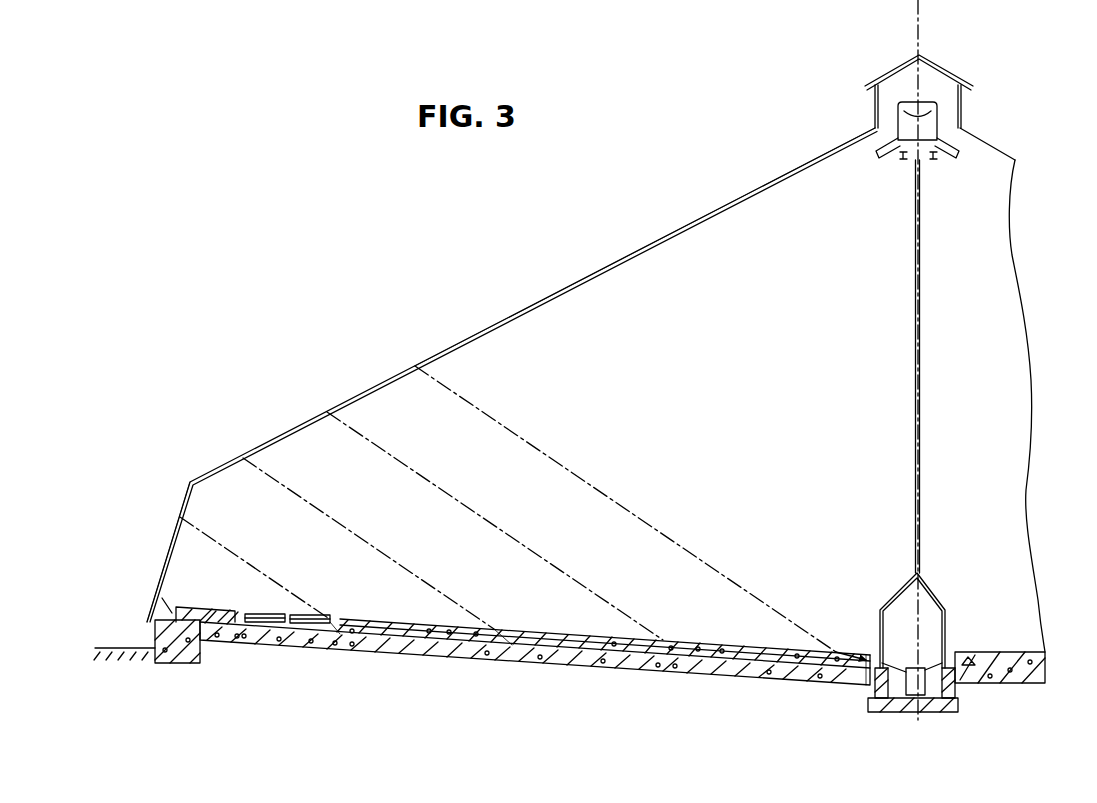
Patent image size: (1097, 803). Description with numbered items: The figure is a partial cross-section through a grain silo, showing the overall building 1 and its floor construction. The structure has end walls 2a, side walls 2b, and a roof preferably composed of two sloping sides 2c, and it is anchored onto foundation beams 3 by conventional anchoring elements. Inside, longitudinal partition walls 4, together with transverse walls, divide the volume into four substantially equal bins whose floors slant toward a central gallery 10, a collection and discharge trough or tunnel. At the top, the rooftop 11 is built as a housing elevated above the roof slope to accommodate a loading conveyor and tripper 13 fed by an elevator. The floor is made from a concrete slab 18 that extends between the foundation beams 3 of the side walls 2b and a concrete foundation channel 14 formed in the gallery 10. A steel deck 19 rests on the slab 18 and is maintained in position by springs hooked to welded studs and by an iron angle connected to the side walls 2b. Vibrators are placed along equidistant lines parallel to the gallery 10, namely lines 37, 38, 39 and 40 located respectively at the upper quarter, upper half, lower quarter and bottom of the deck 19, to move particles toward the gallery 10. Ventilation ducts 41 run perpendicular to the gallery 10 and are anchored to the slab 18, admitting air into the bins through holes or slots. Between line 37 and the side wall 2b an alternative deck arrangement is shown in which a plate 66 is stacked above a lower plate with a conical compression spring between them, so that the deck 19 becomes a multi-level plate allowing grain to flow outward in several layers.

The building 1 is at (650, 221).
The end wall 2a is at (708, 382).
The side wall 2b is at (180, 514).
The sloping roof side 2c is at (562, 289).
The foundation beam 3 is at (186, 655).
The longitudinal partition wall 4 is at (913, 298).
The central gallery 10 is at (930, 632).
The rooftop 11 is at (875, 74).
The loading conveyor and tripper 13 is at (934, 126).
The concrete foundation channel 14 is at (962, 706).
The concrete slab 18 is at (417, 650).
The steel deck 19 is at (584, 636).
The upper quarter vibrator line 37 is at (331, 632).
The upper half vibrator line 38 is at (508, 643).
The lower quarter vibrator line 39 is at (683, 653).
The bottom vibrator line 40 is at (864, 673).
The ventilation duct 41 is at (726, 650).
The plate 66 is at (232, 615).